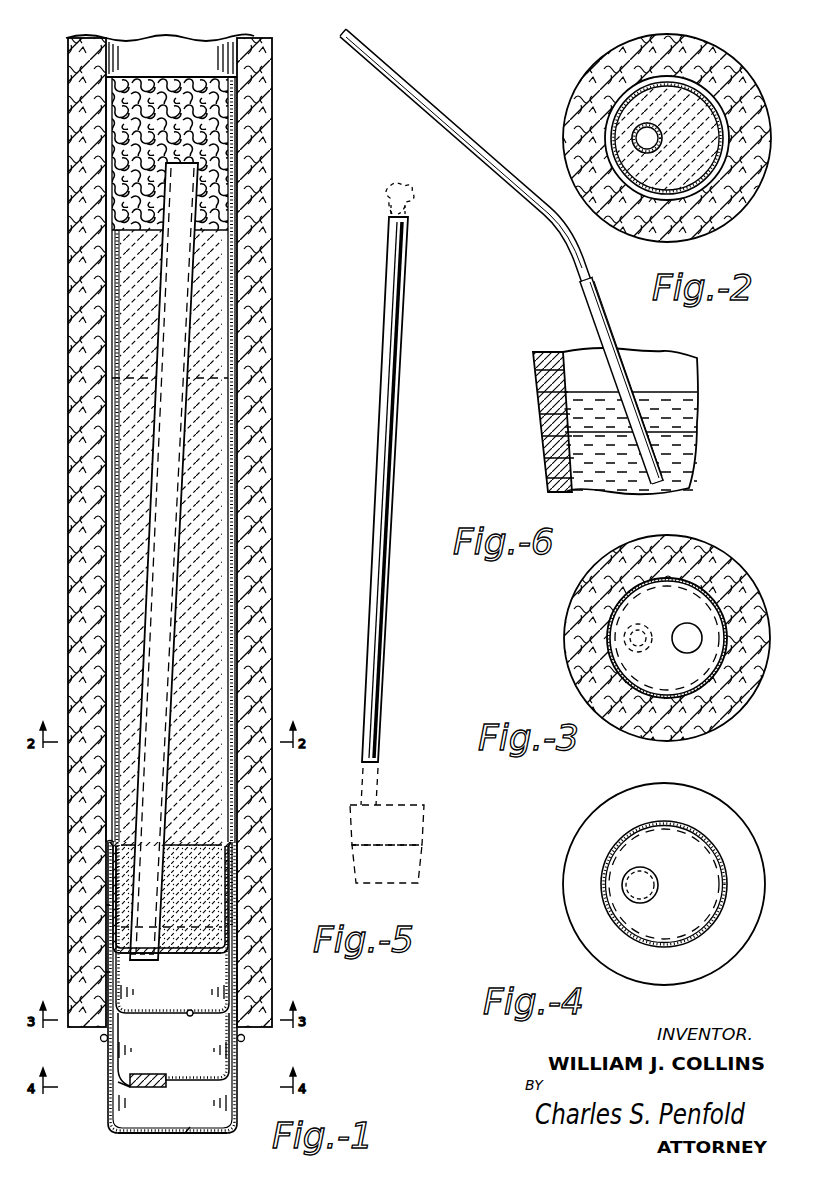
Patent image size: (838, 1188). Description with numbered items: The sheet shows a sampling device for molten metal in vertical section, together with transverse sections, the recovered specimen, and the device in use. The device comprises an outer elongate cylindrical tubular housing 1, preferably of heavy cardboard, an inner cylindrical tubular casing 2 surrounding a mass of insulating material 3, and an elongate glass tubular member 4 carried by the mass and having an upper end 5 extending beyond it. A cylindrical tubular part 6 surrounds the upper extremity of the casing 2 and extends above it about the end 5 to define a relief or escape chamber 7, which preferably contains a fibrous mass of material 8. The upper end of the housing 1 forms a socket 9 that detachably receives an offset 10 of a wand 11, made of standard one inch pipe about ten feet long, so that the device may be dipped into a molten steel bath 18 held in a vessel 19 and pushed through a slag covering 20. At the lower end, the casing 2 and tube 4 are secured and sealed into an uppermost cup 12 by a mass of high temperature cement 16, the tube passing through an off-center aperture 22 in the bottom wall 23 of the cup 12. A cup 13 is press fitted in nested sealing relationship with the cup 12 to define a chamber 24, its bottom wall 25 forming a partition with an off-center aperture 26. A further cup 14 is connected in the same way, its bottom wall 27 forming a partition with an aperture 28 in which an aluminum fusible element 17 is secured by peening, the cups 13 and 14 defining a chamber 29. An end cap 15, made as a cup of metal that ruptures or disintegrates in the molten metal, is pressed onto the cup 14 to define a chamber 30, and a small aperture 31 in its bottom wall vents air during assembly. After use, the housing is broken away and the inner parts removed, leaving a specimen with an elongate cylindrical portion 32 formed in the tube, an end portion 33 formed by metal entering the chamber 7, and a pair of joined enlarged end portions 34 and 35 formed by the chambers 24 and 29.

In FIG. 1, the outer tubular housing 1 is at (272, 249).
In FIG. 2, the outer tubular housing 1 is at (719, 60).
In FIG. 3, the outer tubular housing 1 is at (716, 564).
In FIG. 4, the outer tubular housing 1 is at (729, 817).
In FIG. 1, the inner tubular casing 2 is at (228, 413).
In FIG. 2, the inner tubular casing 2 is at (716, 90).
In FIG. 1, the mass of insulating material 3 is at (208, 440).
In FIG. 1, the tubular member 4 is at (173, 489).
In FIG. 2, the tubular member 4 is at (632, 130).
In FIG. 3, the tubular member 4 is at (640, 650).
In FIG. 1, the upper end of tubular member 5 is at (164, 561).
In FIG. 1, the cylindrical tubular part 6 is at (233, 175).
In FIG. 1, the relief chamber 7 is at (200, 112).
In FIG. 1, the fibrous mass of material 8 is at (225, 135).
In FIG. 1, the socket 9 is at (165, 50).
In FIG. 6, the offset of wand 10 is at (581, 278).
In FIG. 6, the wand 11 is at (433, 107).
In FIG. 1, the uppermost cup 12 is at (112, 872).
In FIG. 1, the cup 13 is at (109, 951).
In FIG. 1, the cup 14 is at (108, 1001).
In FIG. 3, the cup 14 is at (731, 584).
In FIG. 1, the end cap 15 is at (113, 1110).
In FIG. 4, the end cap 15 is at (727, 864).
In FIG. 1, the mass of high temperature cement 16 is at (205, 870).
In FIG. 1, the fusible element 17 is at (140, 1087).
In FIG. 4, the fusible element 17 is at (648, 893).
In FIG. 6, the molten steel bath 18 is at (691, 450).
In FIG. 6, the vessel 19 is at (561, 442).
In FIG. 6, the slag covering 20 is at (689, 410).
In FIG. 1, the aperture 22 is at (165, 960).
In FIG. 3, the aperture 22 is at (643, 622).
In FIG. 1, the bottom wall of uppermost cup 23 is at (194, 954).
In FIG. 1, the chamber 24 is at (175, 981).
In FIG. 1, the bottom wall of second cup 25 is at (152, 1015).
In FIG. 3, the bottom wall of second cup 25 is at (679, 586).
In FIG. 1, the aperture 26 is at (191, 1015).
In FIG. 3, the aperture 26 is at (699, 650).
In FIG. 1, the bottom wall of third cup 27 is at (205, 1080).
In FIG. 4, the bottom wall of third cup 27 is at (671, 836).
In FIG. 1, the aperture 28 is at (126, 1083).
In FIG. 4, the aperture 28 is at (653, 873).
In FIG. 1, the chamber 29 is at (172, 1053).
In FIG. 1, the chamber 30 is at (125, 1118).
In FIG. 1, the vent aperture 31 is at (107, 844).
In FIG. 5, the elongate cylindrical portion of specimen 32 is at (395, 380).
In FIG. 5, the end portion of specimen 33 is at (412, 202).
In FIG. 5, the enlarged end portion of specimen 34 is at (408, 822).
In FIG. 5, the enlarged end portion of specimen 35 is at (408, 865).